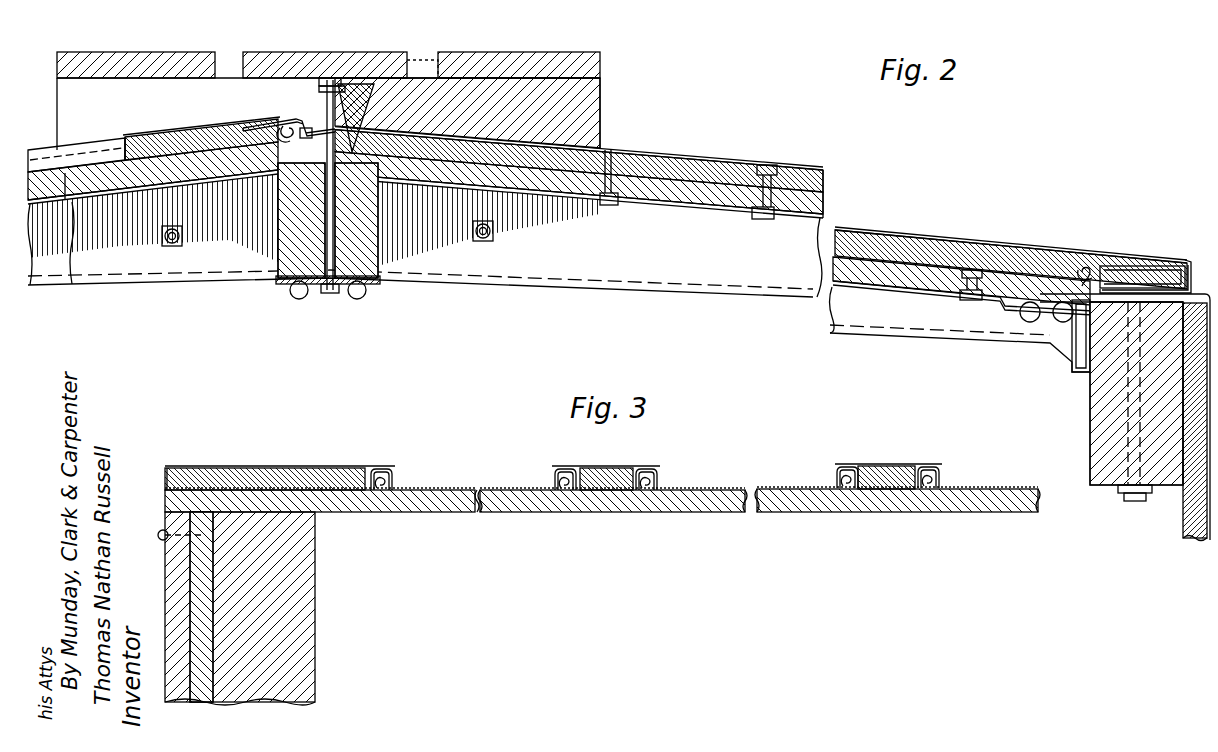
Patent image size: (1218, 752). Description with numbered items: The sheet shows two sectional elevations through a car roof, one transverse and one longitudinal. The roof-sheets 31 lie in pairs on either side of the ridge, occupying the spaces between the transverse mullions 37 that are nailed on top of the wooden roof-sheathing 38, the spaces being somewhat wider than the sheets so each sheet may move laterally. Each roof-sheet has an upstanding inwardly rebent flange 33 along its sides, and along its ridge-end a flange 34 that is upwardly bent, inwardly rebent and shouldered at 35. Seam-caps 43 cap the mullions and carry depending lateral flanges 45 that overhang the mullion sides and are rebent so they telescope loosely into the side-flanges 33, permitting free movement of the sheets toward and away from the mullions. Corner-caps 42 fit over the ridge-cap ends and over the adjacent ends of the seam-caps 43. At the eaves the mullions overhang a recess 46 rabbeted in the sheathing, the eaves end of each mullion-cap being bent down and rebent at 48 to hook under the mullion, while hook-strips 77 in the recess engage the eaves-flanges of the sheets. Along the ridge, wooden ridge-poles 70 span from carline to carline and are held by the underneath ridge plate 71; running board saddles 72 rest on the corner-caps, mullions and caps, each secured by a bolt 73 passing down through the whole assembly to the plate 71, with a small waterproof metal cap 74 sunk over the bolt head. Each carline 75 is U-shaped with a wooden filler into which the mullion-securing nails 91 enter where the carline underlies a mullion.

In FIG. 2, the roof-sheet 31 is at (120, 158).
In FIG. 3, the roof-sheet 31 is at (487, 490).
In FIG. 3, the upstanding inwardly rebent flange 33 is at (385, 470).
In FIG. 2, the ridge-end flange 34 is at (305, 128).
In FIG. 2, the shoulder 35 is at (290, 128).
In FIG. 2, the transverse mullion 37 is at (660, 170).
In FIG. 3, the transverse mullion 37 is at (270, 478).
In FIG. 2, the wooden roof-sheathing 38 is at (640, 182).
In FIG. 3, the wooden roof-sheathing 38 is at (412, 505).
In FIG. 2, the corner-cap 42 is at (258, 118).
In FIG. 2, the seam-cap 43 is at (160, 148).
In FIG. 3, the seam-cap 43 is at (318, 467).
In FIG. 3, the depending lateral flange 45 is at (402, 475).
In FIG. 2, the recess 46 is at (1090, 275).
In FIG. 2, the rebent eaves end of mullion-cap 48 is at (1165, 268).
In FIG. 2, the wooden ridge-pole 70 is at (288, 232).
In FIG. 2, the underneath ridge plate 71 is at (338, 295).
In FIG. 2, the running board saddle 72 is at (200, 112).
In FIG. 2, the bolt 73 is at (356, 130).
In FIG. 2, the waterproof metal cap 74 is at (338, 86).
In FIG. 2, the carline 75 is at (198, 262).
In FIG. 2, the hook-strip 77 is at (1076, 345).
In FIG. 2, the mullion-securing nail 91 is at (388, 80).